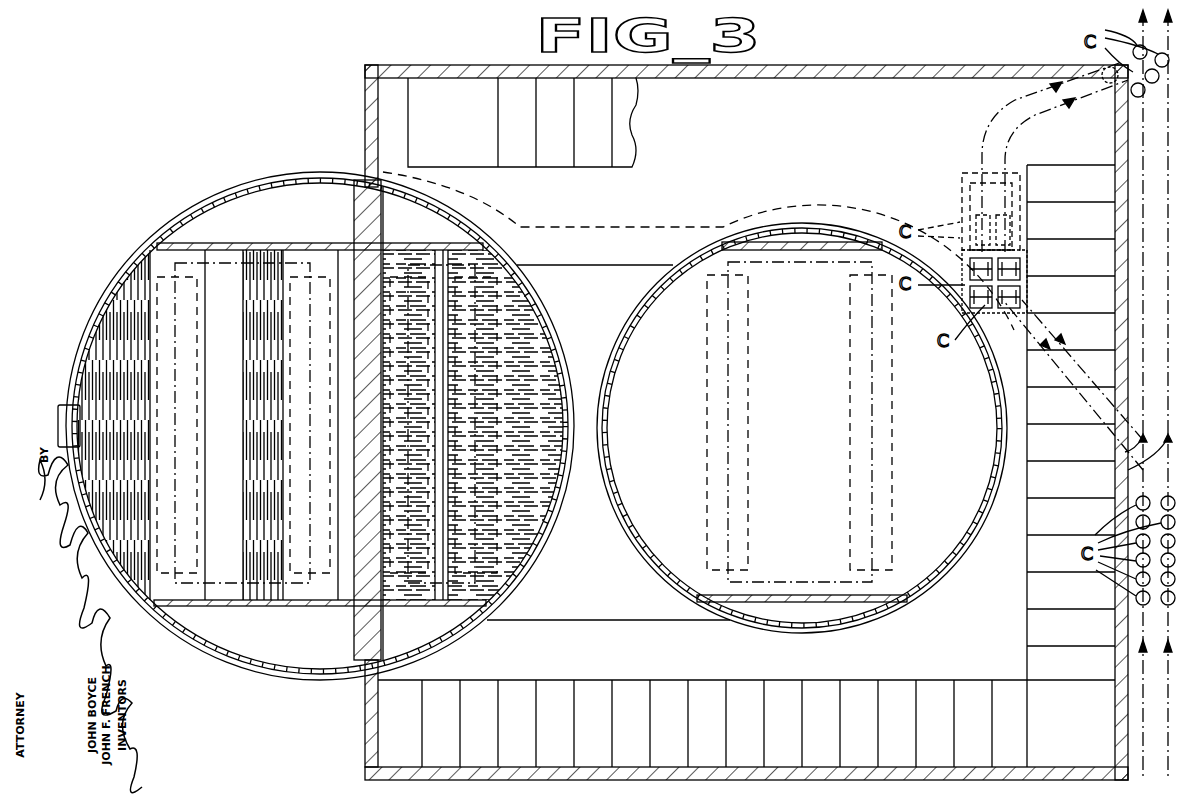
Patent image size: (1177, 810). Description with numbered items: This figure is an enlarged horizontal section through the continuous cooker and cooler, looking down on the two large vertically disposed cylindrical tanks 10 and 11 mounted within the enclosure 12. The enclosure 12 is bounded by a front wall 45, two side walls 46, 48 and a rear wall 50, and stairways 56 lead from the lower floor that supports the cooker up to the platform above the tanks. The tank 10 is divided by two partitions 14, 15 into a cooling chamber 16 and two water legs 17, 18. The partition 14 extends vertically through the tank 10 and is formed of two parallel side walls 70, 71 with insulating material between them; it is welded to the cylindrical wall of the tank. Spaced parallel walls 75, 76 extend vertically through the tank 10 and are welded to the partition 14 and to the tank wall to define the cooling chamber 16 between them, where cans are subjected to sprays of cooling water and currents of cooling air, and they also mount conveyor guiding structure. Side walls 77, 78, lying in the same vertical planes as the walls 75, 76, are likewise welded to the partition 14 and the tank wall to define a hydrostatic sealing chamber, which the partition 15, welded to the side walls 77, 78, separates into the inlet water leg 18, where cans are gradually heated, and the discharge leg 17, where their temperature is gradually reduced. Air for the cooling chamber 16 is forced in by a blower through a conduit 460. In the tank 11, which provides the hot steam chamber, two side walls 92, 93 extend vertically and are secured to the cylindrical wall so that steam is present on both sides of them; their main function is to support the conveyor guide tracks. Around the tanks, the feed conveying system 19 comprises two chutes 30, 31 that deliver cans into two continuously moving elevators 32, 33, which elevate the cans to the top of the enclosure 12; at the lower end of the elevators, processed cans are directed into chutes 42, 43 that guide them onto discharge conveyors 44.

The cylindrical tank 10 is at (304, 394).
The cylindrical tank 11 is at (802, 395).
The enclosure 12 is at (703, 399).
The partition 14 is at (356, 232).
The partition 15 is at (430, 270).
The cooling chamber 16 is at (230, 422).
The water leg 17 is at (413, 545).
The water leg 18 is at (520, 340).
The feed conveying system 19 is at (962, 170).
The chute 30 is at (1075, 350).
The chute 31 is at (1070, 395).
The elevator 32 is at (980, 305).
The elevator 33 is at (1015, 300).
The chute 42 is at (1030, 140).
The chute 43 is at (1020, 118).
The discharge conveyor 44 is at (1140, 250).
The front wall 45 is at (1115, 475).
The side wall 46 is at (398, 78).
The side wall 48 is at (745, 768).
The rear wall 50 is at (365, 100).
The stairway 56 is at (640, 103).
The side wall 70 is at (352, 620).
The side wall 71 is at (383, 640).
The wall 75 is at (290, 247).
The wall 76 is at (272, 606).
The side wall 77 is at (450, 243).
The side wall 78 is at (448, 603).
The side wall 92 is at (790, 250).
The side wall 93 is at (773, 595).
The conduit 460 is at (62, 405).